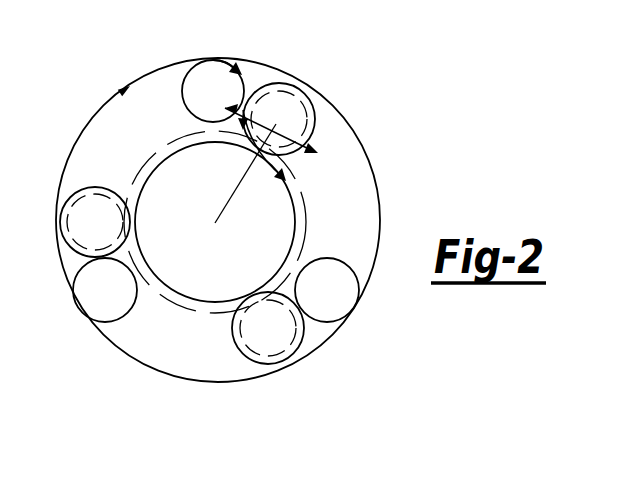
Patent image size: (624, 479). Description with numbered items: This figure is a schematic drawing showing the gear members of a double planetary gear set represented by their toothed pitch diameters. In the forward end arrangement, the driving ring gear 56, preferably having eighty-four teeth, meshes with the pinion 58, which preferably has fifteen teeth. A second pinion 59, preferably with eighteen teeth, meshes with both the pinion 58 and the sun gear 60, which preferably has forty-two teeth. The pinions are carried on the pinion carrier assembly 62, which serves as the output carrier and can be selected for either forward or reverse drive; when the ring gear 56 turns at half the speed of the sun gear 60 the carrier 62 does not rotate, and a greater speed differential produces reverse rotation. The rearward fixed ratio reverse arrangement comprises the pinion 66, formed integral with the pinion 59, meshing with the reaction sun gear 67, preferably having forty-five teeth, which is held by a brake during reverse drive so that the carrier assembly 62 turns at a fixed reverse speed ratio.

The driving ring gear 56 is at (213, 385).
The pinion 58 is at (327, 322).
The pinion 59 is at (268, 364).
The sun gear 60 is at (190, 278).
The pinion carrier assembly 62 is at (235, 191).
The pinion 66 is at (262, 270).
The reaction sun gear 67 is at (143, 277).